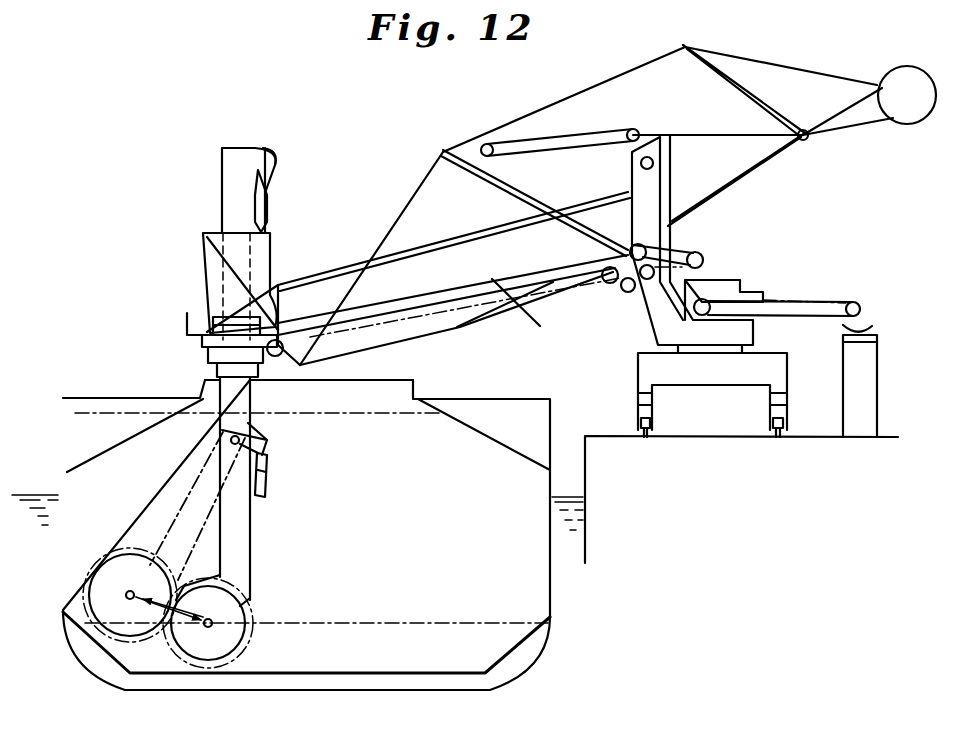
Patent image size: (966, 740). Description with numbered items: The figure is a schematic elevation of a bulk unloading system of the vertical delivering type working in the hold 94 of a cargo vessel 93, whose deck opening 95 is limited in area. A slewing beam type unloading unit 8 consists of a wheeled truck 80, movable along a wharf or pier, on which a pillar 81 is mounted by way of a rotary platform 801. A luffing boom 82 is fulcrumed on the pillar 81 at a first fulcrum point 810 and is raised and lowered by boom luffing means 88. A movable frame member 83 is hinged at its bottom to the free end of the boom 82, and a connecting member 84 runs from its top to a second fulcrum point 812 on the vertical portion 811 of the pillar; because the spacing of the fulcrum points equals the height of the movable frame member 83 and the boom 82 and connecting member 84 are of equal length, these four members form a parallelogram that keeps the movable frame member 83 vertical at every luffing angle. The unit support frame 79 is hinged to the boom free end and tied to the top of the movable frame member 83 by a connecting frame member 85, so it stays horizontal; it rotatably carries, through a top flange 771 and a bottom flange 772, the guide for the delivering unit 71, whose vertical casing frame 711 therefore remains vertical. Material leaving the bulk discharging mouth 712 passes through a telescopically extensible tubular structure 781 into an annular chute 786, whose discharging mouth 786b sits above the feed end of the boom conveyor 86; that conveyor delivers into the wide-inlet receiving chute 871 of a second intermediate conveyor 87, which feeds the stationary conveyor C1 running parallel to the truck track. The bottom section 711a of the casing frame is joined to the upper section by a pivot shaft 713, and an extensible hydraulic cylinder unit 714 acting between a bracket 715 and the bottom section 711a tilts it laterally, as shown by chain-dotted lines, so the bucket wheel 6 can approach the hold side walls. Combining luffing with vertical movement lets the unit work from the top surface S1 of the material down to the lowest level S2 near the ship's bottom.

The bucket wheel 6 is at (272, 612).
The slewing beam type unloading unit 8 is at (497, 114).
The delivering unit 71 is at (218, 216).
The unit support frame 79 is at (196, 344).
The wheeled truck 80 is at (787, 366).
The pillar 81 is at (672, 234).
The luffing boom 82 is at (493, 318).
The movable frame member 83 is at (300, 280).
The connecting member 84 is at (438, 243).
The connecting frame member 85 is at (206, 300).
The boom conveyor 86 is at (478, 286).
The second intermediate conveyor 87 is at (808, 305).
The boom luffing means 88 is at (630, 122).
The cargo vessel 93 is at (83, 398).
The hold 94 is at (480, 511).
The deck opening 95 is at (400, 378).
The vertical casing frame 711 is at (222, 192).
The bottom section 711a is at (250, 550).
The bulk discharging mouth 712 is at (268, 188).
The pivot shaft 713 is at (215, 445).
The extensible hydraulic cylinder unit 714 is at (256, 493).
The bracket 715 is at (270, 437).
The top flange 771 is at (210, 318).
The bottom flange 772 is at (207, 366).
The telescopically extensible tubular structure 781 is at (274, 212).
The annular chute 786 is at (275, 253).
The discharging mouth 786b is at (328, 308).
The rotary platform 801 is at (666, 356).
The first fulcrum point 810 is at (628, 245).
The vertical portion 811 is at (672, 195).
The second fulcrum point 812 is at (622, 188).
The receiving chute 871 is at (743, 290).
The stationary conveyor C1 is at (877, 328).
The top surface of material S1 is at (372, 396).
The lowest level S2 is at (316, 609).